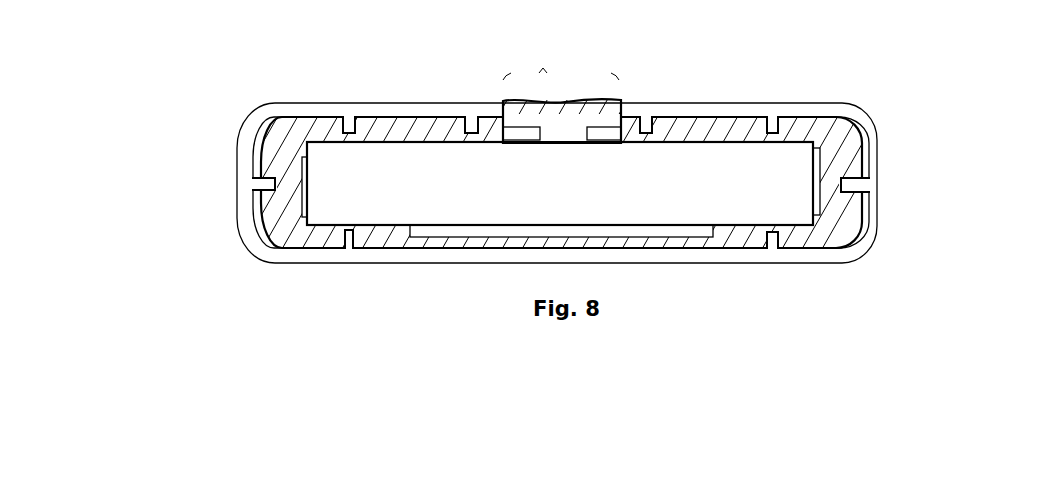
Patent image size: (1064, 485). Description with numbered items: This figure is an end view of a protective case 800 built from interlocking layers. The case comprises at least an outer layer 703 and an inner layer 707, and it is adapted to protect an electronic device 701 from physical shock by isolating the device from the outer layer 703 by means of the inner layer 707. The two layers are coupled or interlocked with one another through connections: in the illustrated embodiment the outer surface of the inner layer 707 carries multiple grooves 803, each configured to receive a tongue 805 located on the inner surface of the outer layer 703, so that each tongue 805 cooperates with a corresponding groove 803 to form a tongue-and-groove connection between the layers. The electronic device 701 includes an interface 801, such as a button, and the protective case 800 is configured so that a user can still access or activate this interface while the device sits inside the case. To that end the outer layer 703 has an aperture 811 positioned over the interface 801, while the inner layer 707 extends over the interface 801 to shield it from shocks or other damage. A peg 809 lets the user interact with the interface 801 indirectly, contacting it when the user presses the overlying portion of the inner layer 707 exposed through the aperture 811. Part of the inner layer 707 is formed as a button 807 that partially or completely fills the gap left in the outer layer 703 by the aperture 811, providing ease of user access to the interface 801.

The protective case 800 is at (597, 169).
The electronic device 701 is at (561, 189).
The outer layer 703 is at (238, 182).
The inner layer 707 is at (368, 118).
The interface 801 is at (619, 129).
The grooves 803 is at (345, 222).
The tongue 805 is at (256, 193).
The button 807 is at (576, 101).
The peg 809 is at (533, 140).
The aperture 811 is at (561, 62).